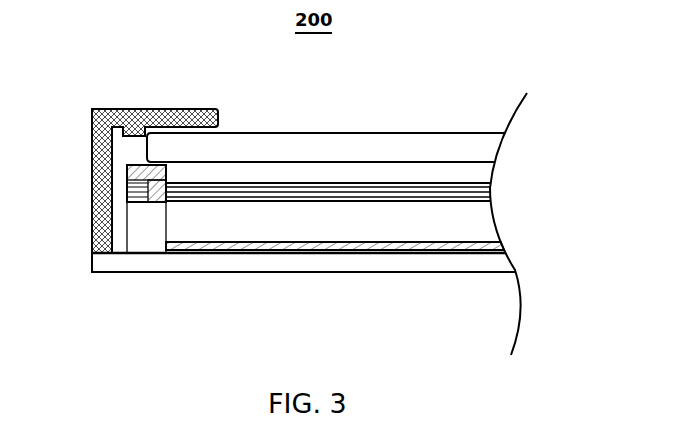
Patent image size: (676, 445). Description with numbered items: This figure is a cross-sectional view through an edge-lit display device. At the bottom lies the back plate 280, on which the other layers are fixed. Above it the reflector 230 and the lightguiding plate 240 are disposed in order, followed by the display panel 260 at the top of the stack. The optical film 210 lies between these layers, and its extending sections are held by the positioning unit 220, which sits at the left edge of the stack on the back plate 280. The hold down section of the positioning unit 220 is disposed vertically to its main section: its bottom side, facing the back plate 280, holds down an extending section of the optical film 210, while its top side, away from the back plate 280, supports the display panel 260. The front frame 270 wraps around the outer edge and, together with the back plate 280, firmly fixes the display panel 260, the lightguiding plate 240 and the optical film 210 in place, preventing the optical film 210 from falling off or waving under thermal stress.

The optical film 210 is at (467, 182).
The positioning unit 220 is at (137, 165).
The reflector 230 is at (502, 243).
The lightguiding plate 240 is at (465, 215).
The display panel 260 is at (423, 150).
The front frame 270 is at (137, 108).
The back plate 280 is at (192, 265).